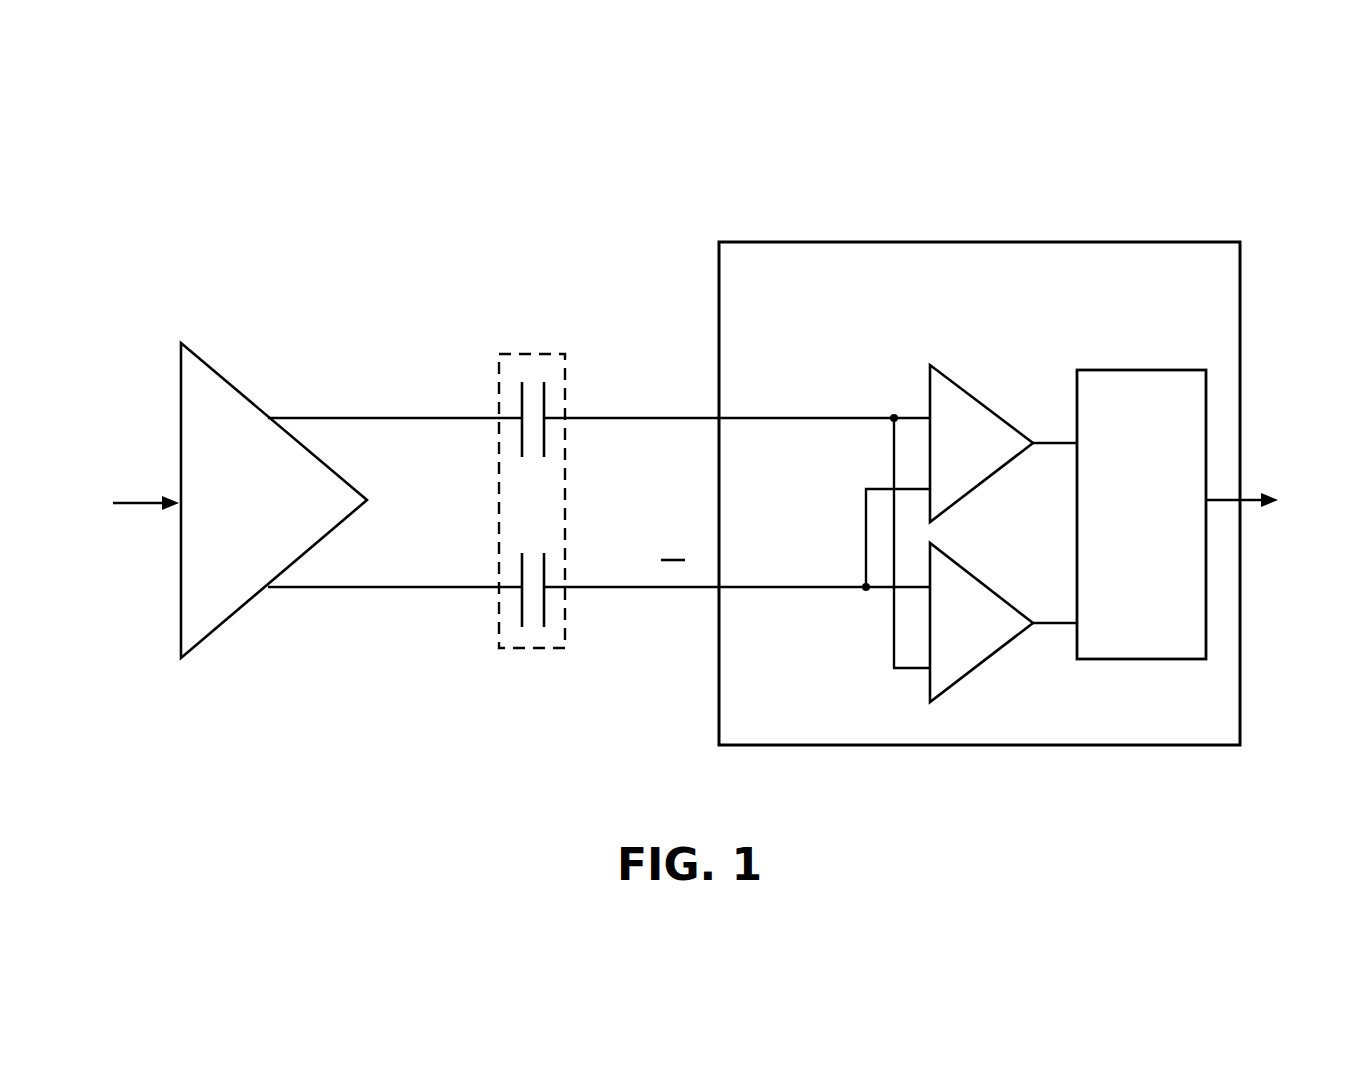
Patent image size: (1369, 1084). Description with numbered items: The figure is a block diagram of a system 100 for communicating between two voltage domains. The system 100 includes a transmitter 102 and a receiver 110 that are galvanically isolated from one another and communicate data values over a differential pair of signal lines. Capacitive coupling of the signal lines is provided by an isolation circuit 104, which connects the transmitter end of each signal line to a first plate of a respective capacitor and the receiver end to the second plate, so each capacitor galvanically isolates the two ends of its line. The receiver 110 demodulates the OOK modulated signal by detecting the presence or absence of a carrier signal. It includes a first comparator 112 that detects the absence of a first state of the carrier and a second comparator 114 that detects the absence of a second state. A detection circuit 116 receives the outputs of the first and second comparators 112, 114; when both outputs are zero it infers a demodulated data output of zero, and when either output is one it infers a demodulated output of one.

The system 100 is at (271, 138).
The transmitter 102 is at (223, 370).
The isolation circuit 104 is at (508, 354).
The receiver 110 is at (719, 242).
The first comparator 112 is at (930, 388).
The second comparator 114 is at (983, 660).
The detection circuit 116 is at (1172, 371).